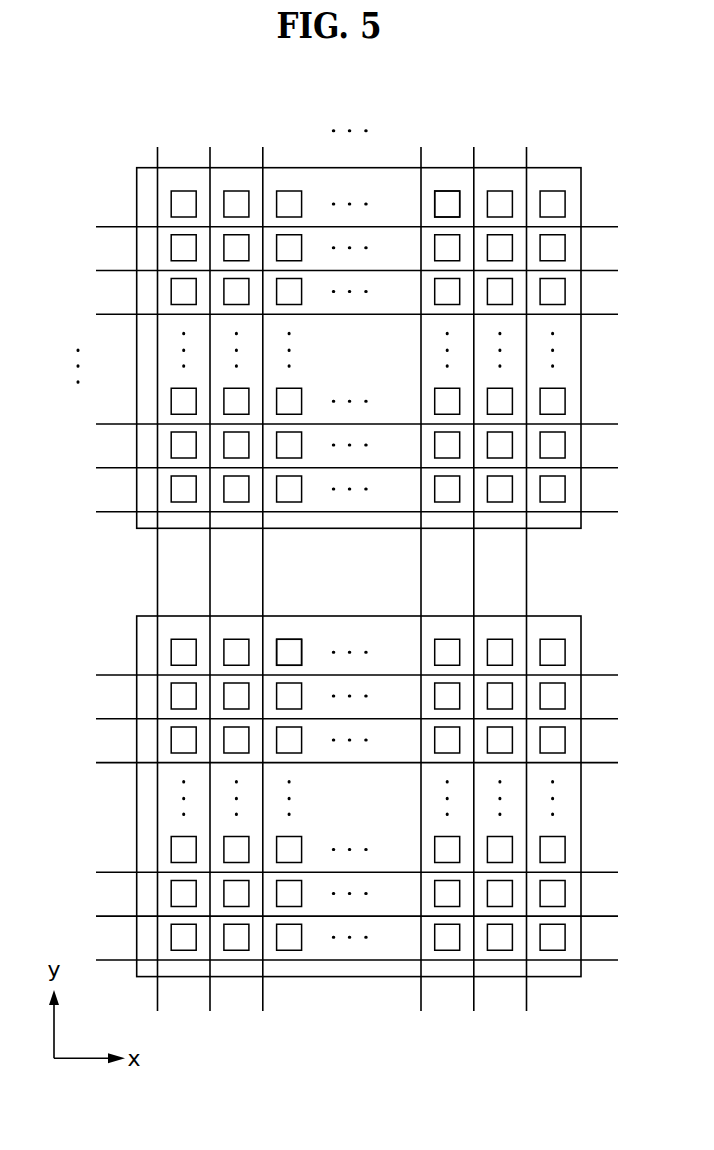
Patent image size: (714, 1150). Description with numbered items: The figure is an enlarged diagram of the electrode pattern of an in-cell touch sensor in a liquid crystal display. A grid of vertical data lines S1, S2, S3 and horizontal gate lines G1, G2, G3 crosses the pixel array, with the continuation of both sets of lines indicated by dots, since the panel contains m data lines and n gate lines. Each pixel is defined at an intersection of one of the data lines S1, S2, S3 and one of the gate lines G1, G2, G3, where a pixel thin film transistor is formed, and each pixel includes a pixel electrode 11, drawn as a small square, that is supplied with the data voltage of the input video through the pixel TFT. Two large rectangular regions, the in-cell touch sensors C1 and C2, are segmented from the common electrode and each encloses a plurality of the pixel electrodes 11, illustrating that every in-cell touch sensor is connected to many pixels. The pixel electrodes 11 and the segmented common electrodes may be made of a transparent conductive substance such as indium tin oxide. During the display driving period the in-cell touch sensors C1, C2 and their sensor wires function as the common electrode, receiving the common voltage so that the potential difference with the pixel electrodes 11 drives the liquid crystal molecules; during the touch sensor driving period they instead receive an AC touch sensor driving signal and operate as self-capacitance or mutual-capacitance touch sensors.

The pixel electrode 11 is at (449, 190).
The data line S1 is at (157, 564).
The data line S2 is at (210, 564).
The data line S3 is at (263, 564).
The gate line G1 is at (341, 226).
The gate line G2 is at (341, 270).
The gate line G3 is at (341, 314).
The in-cell touch sensor C1 is at (555, 167).
The in-cell touch sensor C2 is at (555, 616).